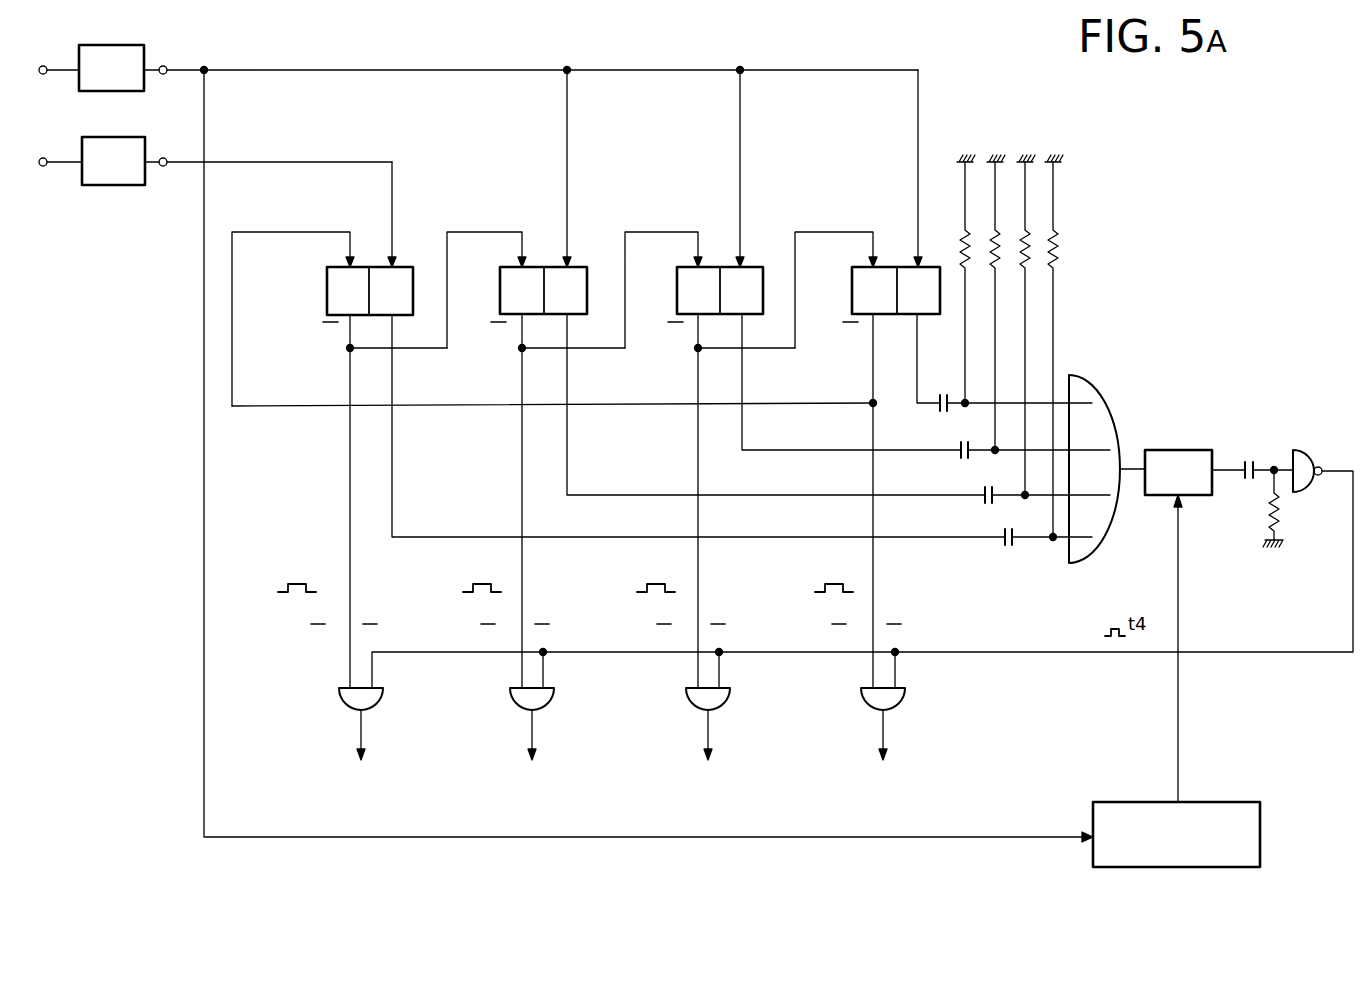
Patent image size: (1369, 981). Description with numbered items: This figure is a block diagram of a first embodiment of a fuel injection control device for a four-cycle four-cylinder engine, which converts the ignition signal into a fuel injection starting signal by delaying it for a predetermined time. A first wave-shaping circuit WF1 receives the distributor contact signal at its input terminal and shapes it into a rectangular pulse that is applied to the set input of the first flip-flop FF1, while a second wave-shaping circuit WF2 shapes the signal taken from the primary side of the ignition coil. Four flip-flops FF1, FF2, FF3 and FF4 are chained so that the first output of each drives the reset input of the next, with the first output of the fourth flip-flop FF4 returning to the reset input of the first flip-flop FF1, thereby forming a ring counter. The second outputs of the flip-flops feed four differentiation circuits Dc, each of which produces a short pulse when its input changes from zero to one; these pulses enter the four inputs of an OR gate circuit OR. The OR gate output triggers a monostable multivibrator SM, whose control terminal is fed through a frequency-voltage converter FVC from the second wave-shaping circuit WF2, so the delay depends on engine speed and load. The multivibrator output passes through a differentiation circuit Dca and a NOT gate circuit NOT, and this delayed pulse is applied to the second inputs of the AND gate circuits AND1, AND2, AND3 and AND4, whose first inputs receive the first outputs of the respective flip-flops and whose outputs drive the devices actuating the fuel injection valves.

The second wave-shaping circuit WF2 is at (158, 52).
The first wave-shaping circuit WF1 is at (158, 144).
The first flip-flop FF1 is at (240, 203).
The second flip-flop FF2 is at (443, 203).
The third flip-flop FF3 is at (620, 203).
The fourth flip-flop FF4 is at (787, 203).
The differentiation circuits Dc is at (1073, 142).
The OR gate circuit OR is at (1104, 453).
The monostable multivibrator SM is at (1198, 520).
The differentiation circuit Dca is at (1285, 454).
The NOT gate circuit NOT is at (862, 545).
The AND gate circuit AND1 is at (746, 753).
The AND gate circuit AND2 is at (570, 753).
The AND gate circuit AND3 is at (922, 753).
The AND gate circuit AND4 is at (398, 753).
The frequency-voltage converter FVC is at (1123, 802).